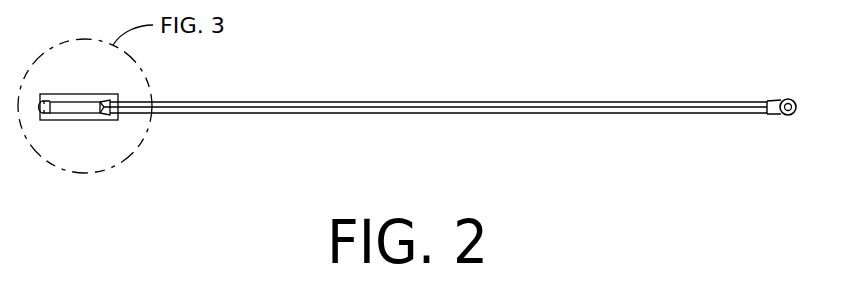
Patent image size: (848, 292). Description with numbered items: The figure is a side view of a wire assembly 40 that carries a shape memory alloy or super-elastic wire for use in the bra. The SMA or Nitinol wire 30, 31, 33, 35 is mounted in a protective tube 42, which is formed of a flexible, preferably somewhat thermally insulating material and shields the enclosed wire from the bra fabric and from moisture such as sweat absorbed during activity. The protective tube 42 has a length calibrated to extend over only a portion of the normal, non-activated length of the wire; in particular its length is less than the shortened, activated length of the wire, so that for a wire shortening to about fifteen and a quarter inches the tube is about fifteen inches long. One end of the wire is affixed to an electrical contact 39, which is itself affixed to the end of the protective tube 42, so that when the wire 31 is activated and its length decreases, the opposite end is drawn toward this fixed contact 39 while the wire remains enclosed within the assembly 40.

The SMA or Nitinol wire 30 is at (500, 102).
The SMA or Nitinol wire 31 is at (438, 150).
The SMA or Nitinol wire 33 is at (438, 150).
The SMA or Nitinol wire 35 is at (438, 150).
The electrical contact 39 is at (793, 114).
The wire assembly 40 is at (450, 114).
The protective tube 42 is at (582, 114).